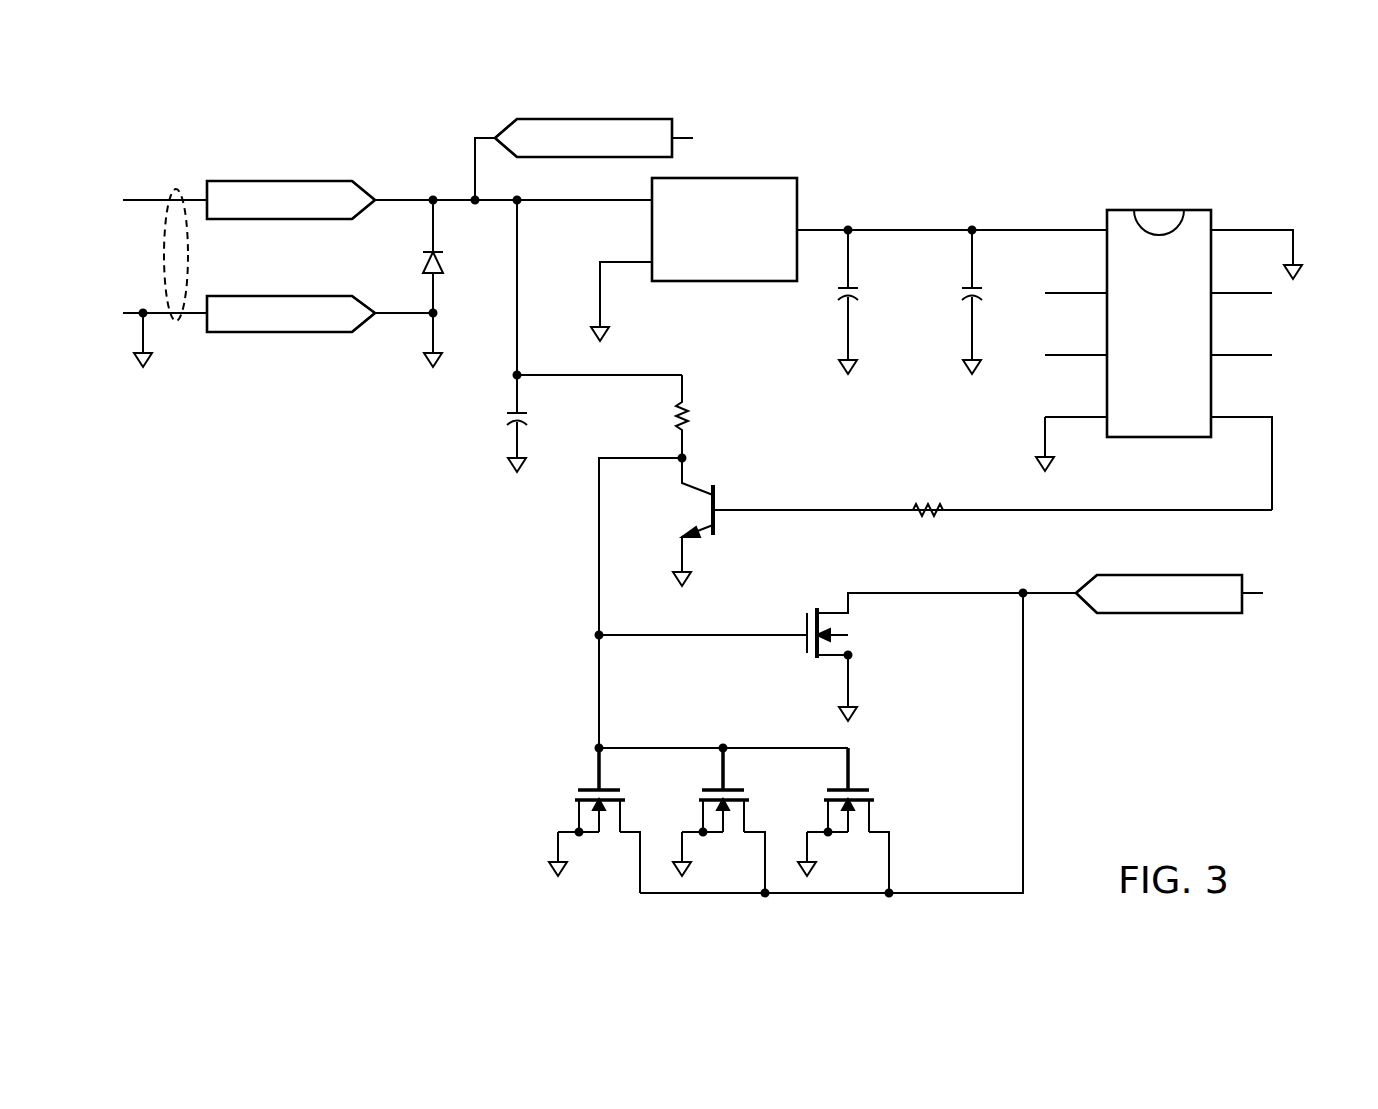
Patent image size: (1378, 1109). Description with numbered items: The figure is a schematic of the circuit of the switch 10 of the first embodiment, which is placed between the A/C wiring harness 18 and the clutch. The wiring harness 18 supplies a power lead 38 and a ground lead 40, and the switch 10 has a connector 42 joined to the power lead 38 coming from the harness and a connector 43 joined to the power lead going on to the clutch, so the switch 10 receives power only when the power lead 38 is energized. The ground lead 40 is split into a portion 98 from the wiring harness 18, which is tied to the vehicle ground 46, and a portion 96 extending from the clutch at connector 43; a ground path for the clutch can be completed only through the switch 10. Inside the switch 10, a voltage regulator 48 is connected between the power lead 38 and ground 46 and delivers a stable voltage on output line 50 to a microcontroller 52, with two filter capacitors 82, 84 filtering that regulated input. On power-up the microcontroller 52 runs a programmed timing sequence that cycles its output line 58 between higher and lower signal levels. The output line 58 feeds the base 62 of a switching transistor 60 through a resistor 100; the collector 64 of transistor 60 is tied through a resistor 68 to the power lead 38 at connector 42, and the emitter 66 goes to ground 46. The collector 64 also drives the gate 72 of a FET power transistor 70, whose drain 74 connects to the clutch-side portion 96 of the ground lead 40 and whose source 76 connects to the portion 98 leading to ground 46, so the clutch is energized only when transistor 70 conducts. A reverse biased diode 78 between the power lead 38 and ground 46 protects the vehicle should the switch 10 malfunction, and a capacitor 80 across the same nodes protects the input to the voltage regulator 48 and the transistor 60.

The switch 10 is at (1290, 153).
The A/C wiring harness 18 is at (173, 192).
The power lead 38 is at (278, 181).
The ground lead 40 is at (280, 333).
The connector 42 is at (365, 189).
The connector 43 is at (505, 131).
The vehicle ground 46 is at (152, 362).
The voltage regulator 48 is at (722, 281).
The output line 50 is at (1027, 230).
The microcontroller 52 is at (1145, 375).
The output line 58 is at (1275, 458).
The switching transistor 60 is at (740, 482).
The base 62 is at (722, 513).
The collector 64 is at (697, 492).
The emitter 66 is at (680, 545).
The resistor 68 is at (690, 413).
The FET power transistor 70 is at (797, 648).
The gate 72 is at (792, 628).
The drain 74 is at (866, 593).
The source 76 is at (850, 674).
The reverse biased diode 78 is at (424, 262).
The capacitor 80 is at (503, 415).
The filter capacitor 82 is at (836, 292).
The filter capacitor 84 is at (960, 292).
The portion of the ground lead 96 is at (1170, 613).
The portion of the ground lead 98 is at (278, 296).
The resistor 100 is at (928, 518).